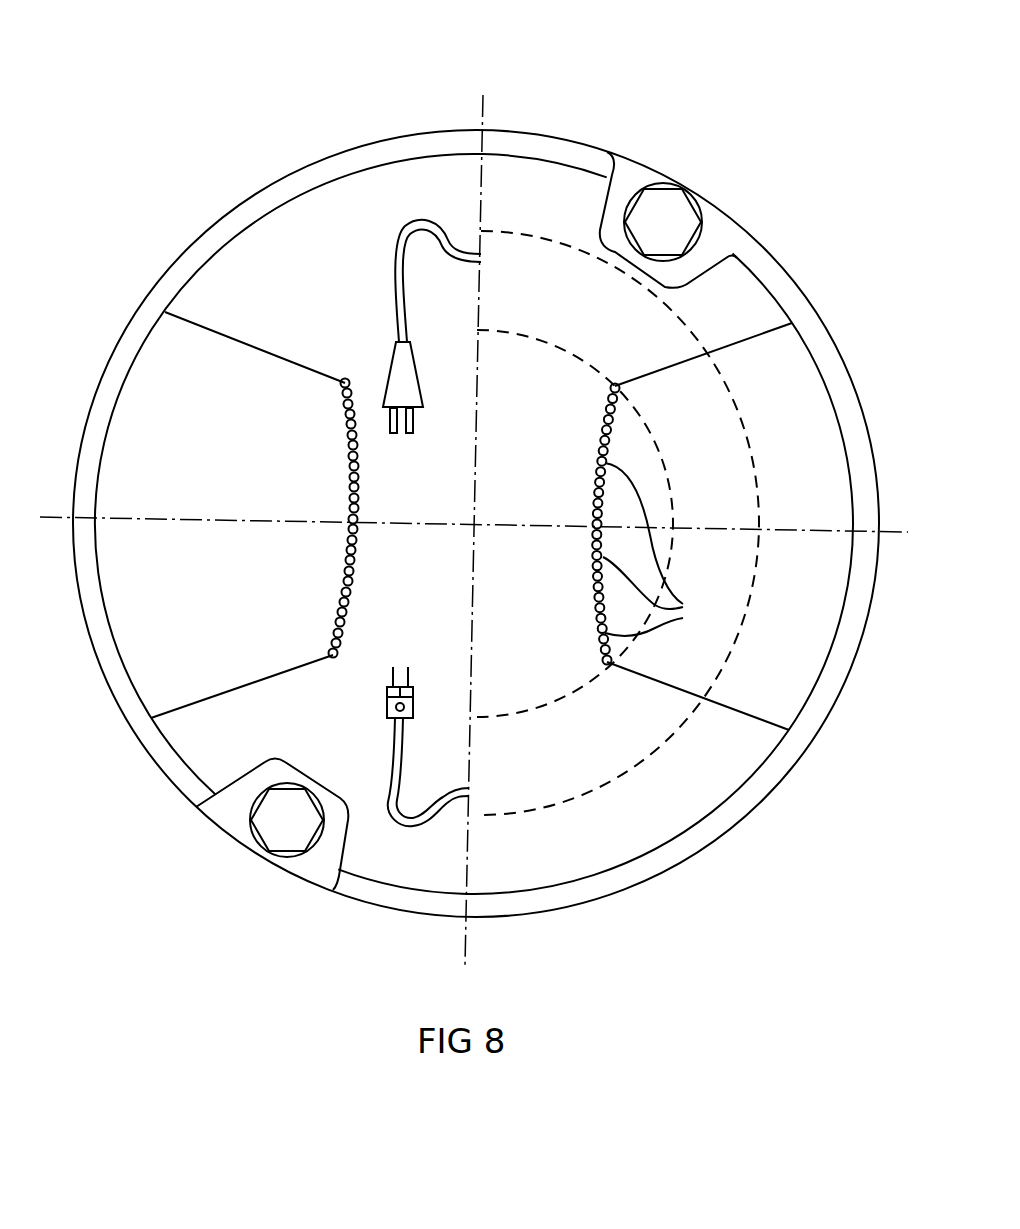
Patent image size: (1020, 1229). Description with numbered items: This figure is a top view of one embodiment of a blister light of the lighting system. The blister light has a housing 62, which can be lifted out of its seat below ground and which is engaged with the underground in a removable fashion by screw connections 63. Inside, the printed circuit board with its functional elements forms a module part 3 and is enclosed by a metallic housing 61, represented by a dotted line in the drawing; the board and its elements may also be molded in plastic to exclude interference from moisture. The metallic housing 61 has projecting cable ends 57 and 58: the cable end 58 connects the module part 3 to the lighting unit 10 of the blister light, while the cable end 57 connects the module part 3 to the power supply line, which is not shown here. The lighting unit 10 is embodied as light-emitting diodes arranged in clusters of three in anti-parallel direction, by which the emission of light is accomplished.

The housing 62 is at (582, 134).
The cable end 58 is at (382, 328).
The cable end 57 is at (382, 732).
The module part 3 is at (676, 310).
The metallic housing 61 is at (616, 783).
The lighting unit 10 is at (662, 549).
The screw connections 63 is at (275, 828).